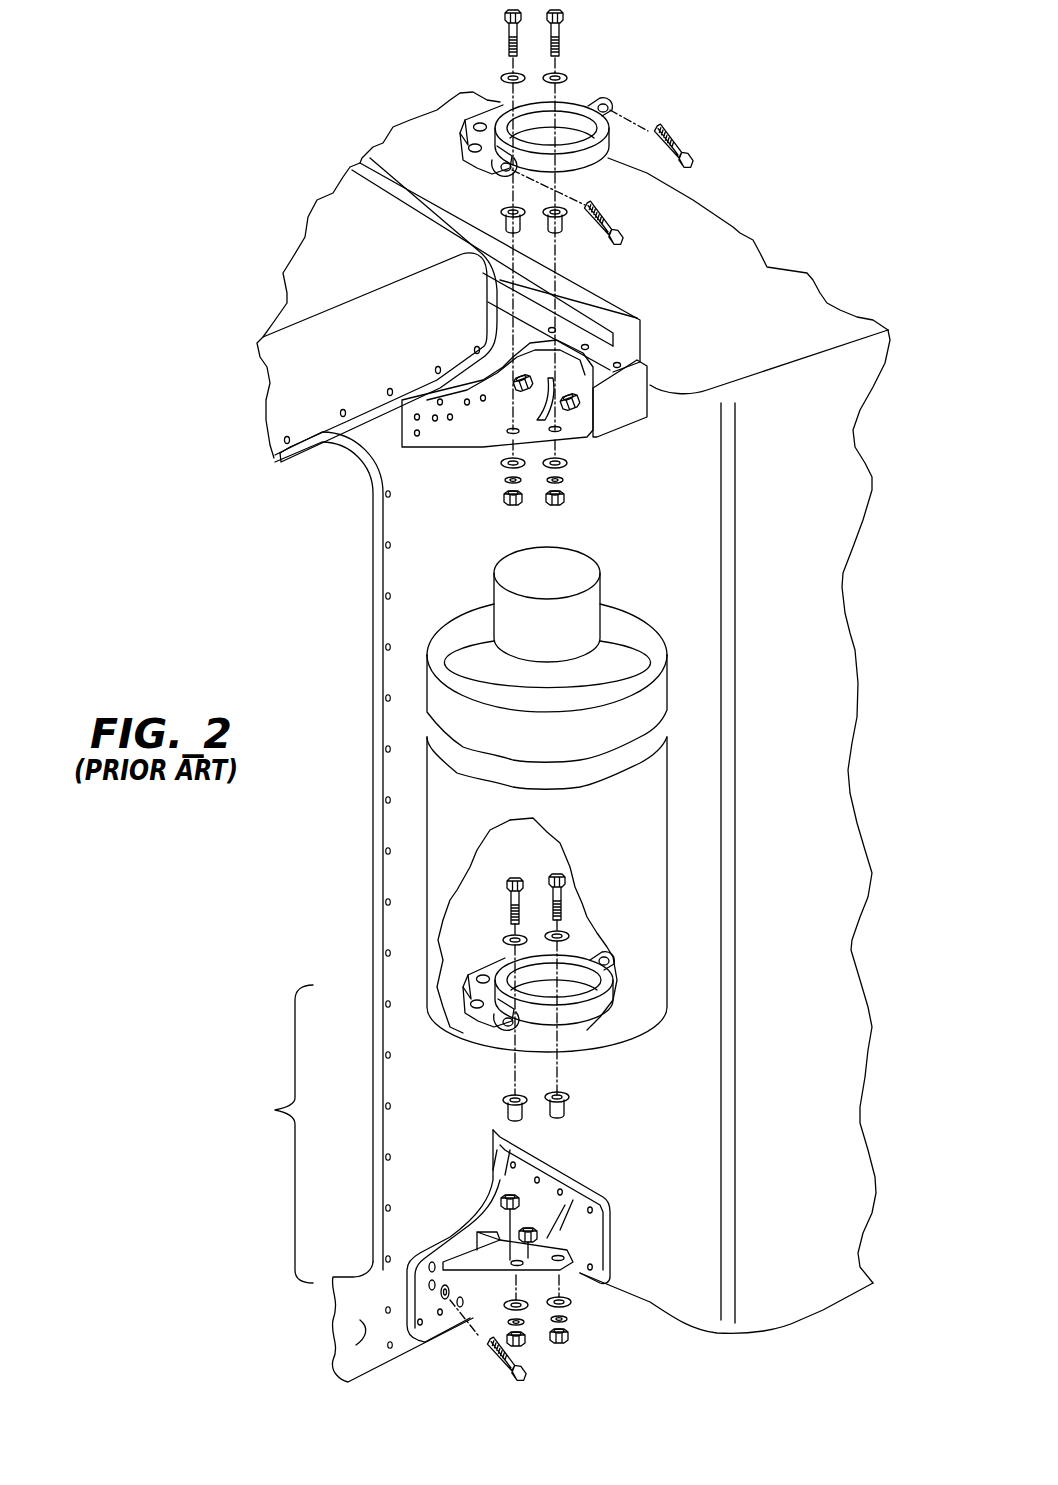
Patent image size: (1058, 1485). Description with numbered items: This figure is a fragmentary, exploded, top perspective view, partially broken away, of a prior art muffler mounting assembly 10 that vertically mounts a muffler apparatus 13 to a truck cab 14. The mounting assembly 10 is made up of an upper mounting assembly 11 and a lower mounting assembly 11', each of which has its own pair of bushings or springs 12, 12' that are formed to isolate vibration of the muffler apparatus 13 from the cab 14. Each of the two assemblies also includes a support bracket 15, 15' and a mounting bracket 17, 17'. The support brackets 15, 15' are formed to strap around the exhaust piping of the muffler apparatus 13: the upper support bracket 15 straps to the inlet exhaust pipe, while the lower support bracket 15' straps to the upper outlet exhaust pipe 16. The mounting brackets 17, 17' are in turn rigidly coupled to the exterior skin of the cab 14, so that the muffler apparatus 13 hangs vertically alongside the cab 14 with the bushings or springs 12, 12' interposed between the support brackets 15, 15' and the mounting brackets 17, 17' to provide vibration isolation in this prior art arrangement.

The mounting assembly 10 is at (807, 85).
The upper mounting assembly 11 is at (529, 282).
The lower mounting assembly 11' is at (272, 1134).
The bushings or springs 12 is at (582, 242).
The bushings or springs 12' is at (573, 1123).
The muffler apparatus 13 is at (398, 932).
The cab 14 is at (375, 1335).
The support bracket 15 is at (581, 220).
The support bracket 15' is at (577, 956).
The upper outlet exhaust pipe 16 is at (578, 552).
The mounting bracket 17 is at (459, 422).
The mounting bracket 17' is at (527, 1256).